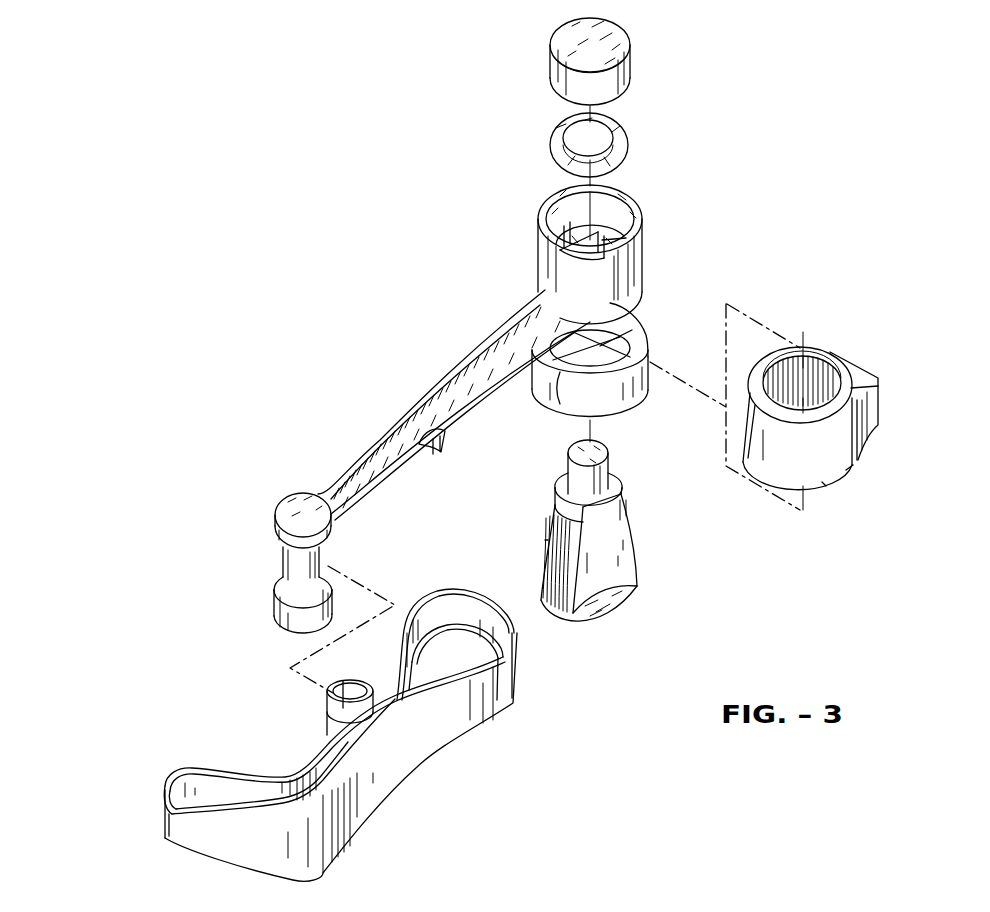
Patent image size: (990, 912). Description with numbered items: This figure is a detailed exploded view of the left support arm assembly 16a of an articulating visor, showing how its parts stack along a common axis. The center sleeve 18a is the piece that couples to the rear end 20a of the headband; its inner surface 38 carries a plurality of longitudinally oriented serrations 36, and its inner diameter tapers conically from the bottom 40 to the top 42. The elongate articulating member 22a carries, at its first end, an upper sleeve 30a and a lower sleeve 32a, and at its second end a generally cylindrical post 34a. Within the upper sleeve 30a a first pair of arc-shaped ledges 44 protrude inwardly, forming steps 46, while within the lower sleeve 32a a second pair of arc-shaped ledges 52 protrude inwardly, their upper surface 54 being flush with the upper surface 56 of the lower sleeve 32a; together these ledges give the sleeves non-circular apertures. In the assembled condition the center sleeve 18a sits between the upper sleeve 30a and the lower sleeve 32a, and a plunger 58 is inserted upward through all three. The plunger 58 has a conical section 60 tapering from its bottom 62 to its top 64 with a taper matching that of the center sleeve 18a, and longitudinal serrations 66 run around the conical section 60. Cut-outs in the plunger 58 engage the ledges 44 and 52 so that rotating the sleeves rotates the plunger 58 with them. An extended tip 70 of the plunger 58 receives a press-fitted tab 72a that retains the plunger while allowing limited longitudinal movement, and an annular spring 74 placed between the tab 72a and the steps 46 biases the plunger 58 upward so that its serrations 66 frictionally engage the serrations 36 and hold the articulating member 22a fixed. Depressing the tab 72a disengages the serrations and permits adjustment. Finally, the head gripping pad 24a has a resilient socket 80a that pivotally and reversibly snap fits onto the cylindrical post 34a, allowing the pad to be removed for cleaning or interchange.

The support arm assembly 16a is at (181, 241).
The center sleeve 18a is at (824, 486).
The rear end of head band 20a is at (880, 376).
The articulating member 22a is at (418, 400).
The head gripping pad 24a is at (423, 776).
The upper sleeve 30a is at (640, 240).
The lower sleeve 32a is at (655, 316).
The cylindrical post 34a is at (291, 577).
The serrations 36 is at (812, 358).
The inner surface 38 is at (833, 374).
The bottom of center sleeve 40 is at (853, 468).
The top of center sleeve 42 is at (830, 350).
The first pair of arc-shaped ledges 44 is at (578, 248).
The steps 46 is at (572, 238).
The second pair of arc-shaped ledges 52 is at (580, 345).
The upper surface of ledges 54 is at (632, 345).
The upper surface of lower sleeve 56 is at (560, 372).
The plunger 58 is at (527, 522).
The conical section 60 is at (546, 554).
The bottom of conical section 62 is at (640, 566).
The top of conical section 64 is at (630, 512).
The serrations 66 is at (550, 572).
The extended tip 70 is at (576, 476).
The tab 72a is at (551, 42).
The annular spring 74 is at (620, 131).
The socket 80a is at (330, 716).